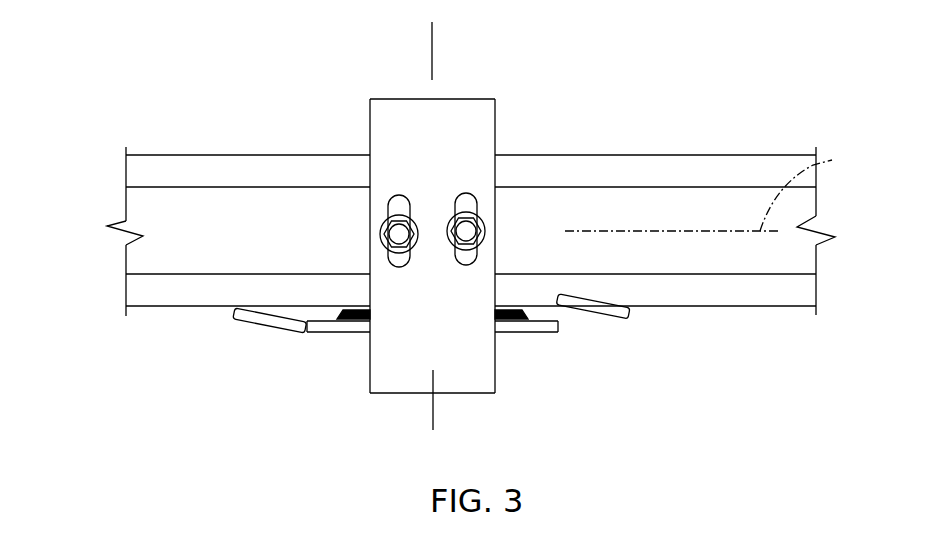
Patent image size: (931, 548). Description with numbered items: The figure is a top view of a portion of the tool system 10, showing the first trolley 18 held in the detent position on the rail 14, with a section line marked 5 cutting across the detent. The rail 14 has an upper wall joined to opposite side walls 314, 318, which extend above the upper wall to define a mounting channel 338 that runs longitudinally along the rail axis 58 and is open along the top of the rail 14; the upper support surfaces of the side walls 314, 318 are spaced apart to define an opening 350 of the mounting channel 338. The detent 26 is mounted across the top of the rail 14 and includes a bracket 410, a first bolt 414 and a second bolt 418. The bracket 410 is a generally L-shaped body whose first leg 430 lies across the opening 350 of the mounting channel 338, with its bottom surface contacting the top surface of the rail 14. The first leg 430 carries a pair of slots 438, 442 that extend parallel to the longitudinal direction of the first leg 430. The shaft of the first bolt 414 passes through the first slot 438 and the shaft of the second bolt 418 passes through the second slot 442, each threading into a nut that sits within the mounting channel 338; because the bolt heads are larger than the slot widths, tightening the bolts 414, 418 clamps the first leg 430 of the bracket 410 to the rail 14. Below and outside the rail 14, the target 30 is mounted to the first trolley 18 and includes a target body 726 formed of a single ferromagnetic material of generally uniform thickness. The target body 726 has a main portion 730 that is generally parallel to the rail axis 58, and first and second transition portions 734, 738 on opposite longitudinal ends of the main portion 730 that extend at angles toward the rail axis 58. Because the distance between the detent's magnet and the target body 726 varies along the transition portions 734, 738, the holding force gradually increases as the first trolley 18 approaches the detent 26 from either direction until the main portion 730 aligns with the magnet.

The tool system 10 is at (305, 58).
The rail 14 is at (173, 155).
The mounting channel 338 is at (245, 215).
The side wall 314 is at (715, 155).
The side wall 318 is at (716, 307).
The opening 350 is at (165, 274).
The rail axis 58 is at (715, 190).
The detent 26 is at (360, 105).
The first leg 430 is at (478, 103).
The bracket 410 is at (495, 110).
The first slot 438 is at (398, 195).
The second slot 442 is at (467, 193).
The first bolt 414 is at (404, 240).
The second bolt 418 is at (468, 236).
The target 30 is at (307, 345).
The first trolley 18 is at (590, 346).
The target body 726 is at (233, 313).
The main portion 730 is at (512, 327).
The first transition portion 734 is at (261, 320).
The second transition portion 738 is at (622, 323).
The section line 5- 5 is at (456, 61).